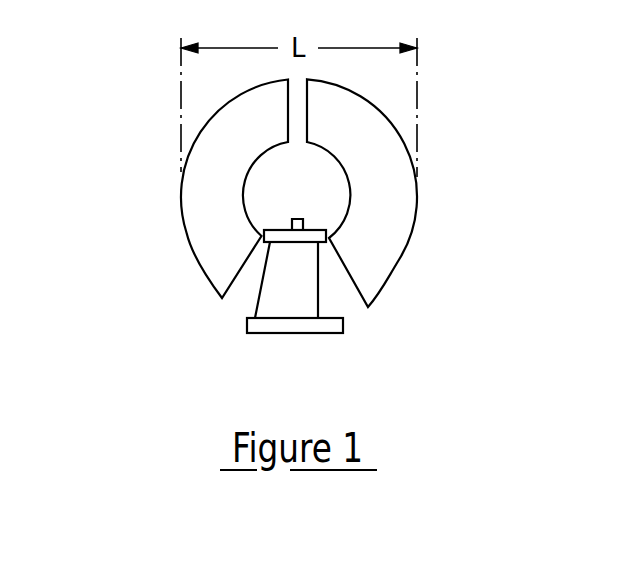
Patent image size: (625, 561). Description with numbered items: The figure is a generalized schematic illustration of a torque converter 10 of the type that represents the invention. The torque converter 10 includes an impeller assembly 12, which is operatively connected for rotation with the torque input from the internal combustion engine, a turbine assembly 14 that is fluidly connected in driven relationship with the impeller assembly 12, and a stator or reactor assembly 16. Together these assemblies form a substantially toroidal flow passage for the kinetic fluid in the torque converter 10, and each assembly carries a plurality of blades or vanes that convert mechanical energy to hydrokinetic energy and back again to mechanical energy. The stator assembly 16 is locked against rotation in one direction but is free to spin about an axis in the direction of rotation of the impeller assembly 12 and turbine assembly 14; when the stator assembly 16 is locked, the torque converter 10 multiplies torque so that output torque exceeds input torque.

The torque converter 10 is at (261, 222).
The impeller assembly 12 is at (397, 217).
The turbine assembly 14 is at (202, 235).
The stator assembly 16 is at (273, 300).